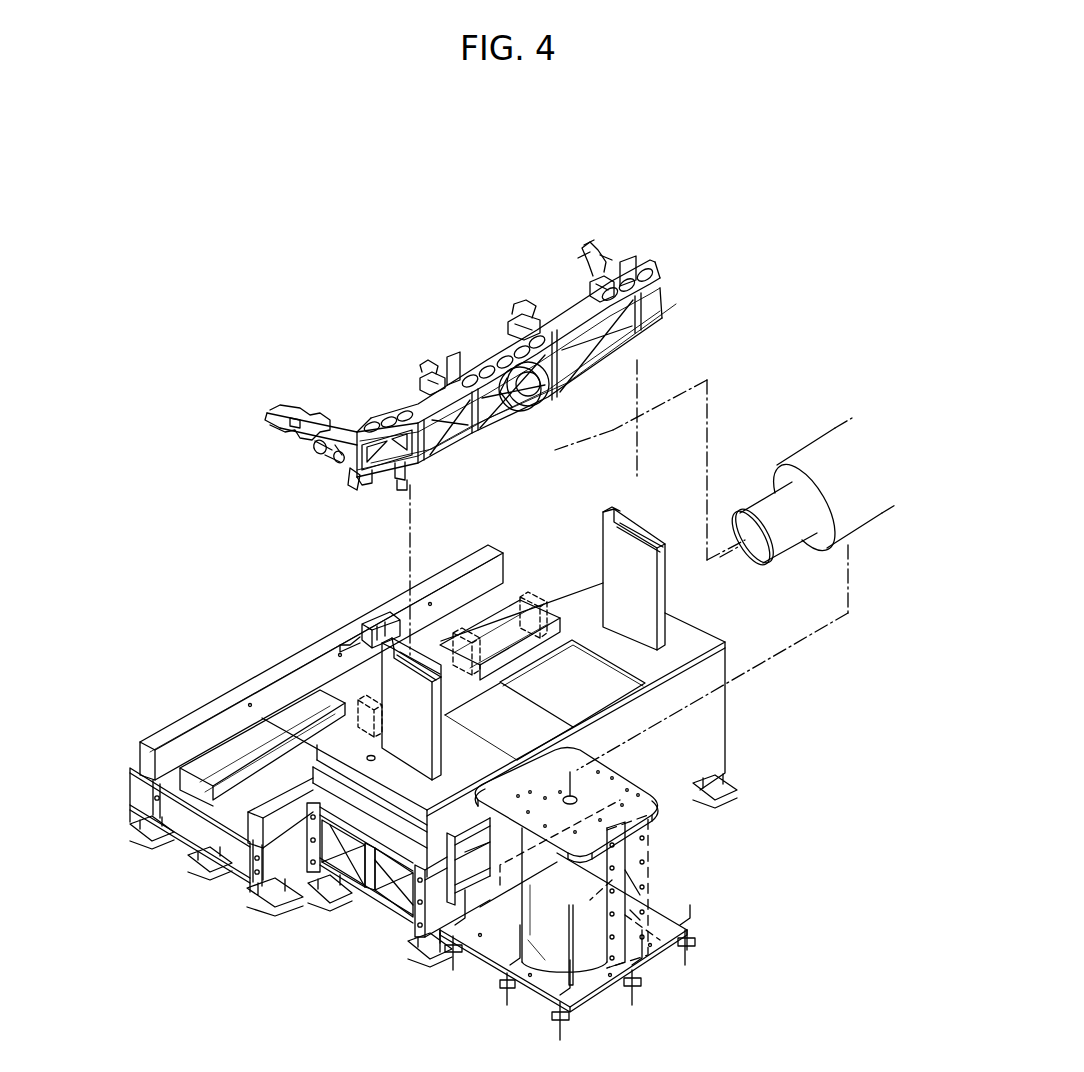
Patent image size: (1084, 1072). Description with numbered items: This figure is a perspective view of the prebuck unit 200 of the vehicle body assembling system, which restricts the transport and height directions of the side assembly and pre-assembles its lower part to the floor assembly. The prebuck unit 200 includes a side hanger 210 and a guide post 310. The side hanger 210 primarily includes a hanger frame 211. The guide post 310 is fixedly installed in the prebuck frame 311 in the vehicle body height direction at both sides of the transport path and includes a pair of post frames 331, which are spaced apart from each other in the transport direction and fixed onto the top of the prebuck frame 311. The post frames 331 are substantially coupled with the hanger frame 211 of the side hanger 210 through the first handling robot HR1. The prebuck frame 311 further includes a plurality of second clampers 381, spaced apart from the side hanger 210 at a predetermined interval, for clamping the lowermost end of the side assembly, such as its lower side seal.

The prebuck unit 200 is at (533, 204).
The side hanger 210 is at (457, 322).
The hanger frame 211 is at (416, 388).
The guide post 310 is at (372, 657).
The prebuck frame 311 is at (357, 762).
The post frame 331 is at (407, 755).
The second clamper 381 is at (470, 625).
The first handling robot HR1 is at (790, 446).